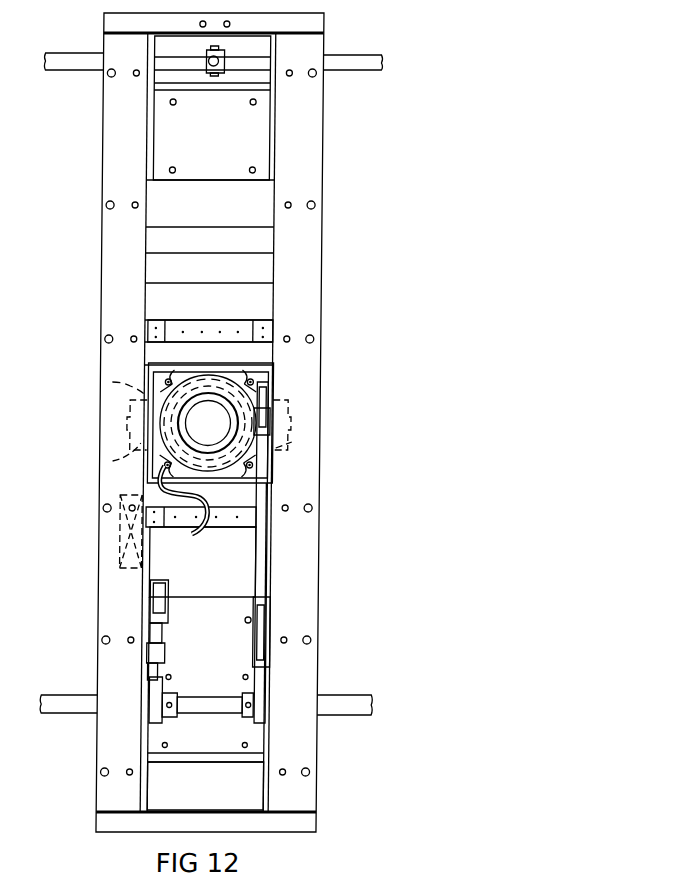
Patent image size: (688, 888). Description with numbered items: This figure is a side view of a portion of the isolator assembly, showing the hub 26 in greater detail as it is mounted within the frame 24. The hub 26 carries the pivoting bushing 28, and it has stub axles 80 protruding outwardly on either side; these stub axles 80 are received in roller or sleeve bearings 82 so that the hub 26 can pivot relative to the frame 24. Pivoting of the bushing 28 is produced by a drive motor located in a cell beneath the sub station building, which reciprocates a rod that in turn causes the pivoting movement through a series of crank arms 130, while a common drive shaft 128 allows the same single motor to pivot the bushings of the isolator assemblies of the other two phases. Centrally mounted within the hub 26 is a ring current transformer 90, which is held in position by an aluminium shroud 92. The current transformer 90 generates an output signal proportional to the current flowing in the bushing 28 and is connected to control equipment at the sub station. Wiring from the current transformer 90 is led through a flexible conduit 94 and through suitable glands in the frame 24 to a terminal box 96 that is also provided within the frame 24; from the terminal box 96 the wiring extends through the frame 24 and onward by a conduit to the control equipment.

The frame 24 is at (332, 532).
The hub 26 is at (110, 448).
The bushing 28 is at (252, 443).
The stub axles 80 is at (126, 428).
The bearings 82 is at (133, 461).
The ring current transformer 90 is at (100, 382).
The aluminium shroud 92 is at (168, 380).
The flexible conduit 94 is at (197, 530).
The terminal box 96 is at (120, 547).
The common drive shaft 128 is at (344, 707).
The crank arms 130 is at (349, 62).